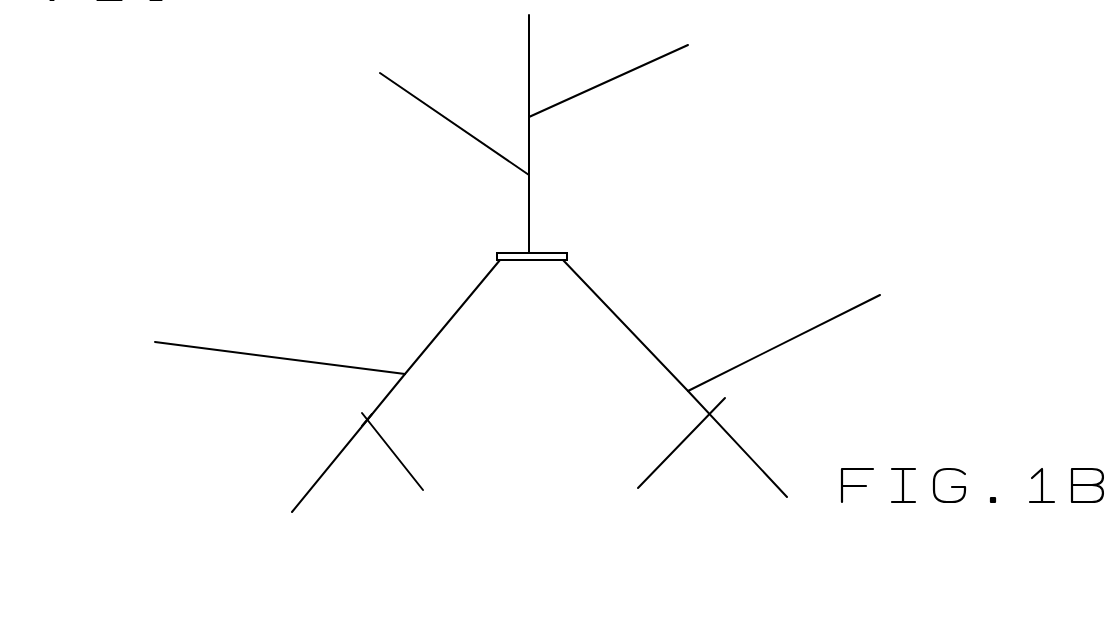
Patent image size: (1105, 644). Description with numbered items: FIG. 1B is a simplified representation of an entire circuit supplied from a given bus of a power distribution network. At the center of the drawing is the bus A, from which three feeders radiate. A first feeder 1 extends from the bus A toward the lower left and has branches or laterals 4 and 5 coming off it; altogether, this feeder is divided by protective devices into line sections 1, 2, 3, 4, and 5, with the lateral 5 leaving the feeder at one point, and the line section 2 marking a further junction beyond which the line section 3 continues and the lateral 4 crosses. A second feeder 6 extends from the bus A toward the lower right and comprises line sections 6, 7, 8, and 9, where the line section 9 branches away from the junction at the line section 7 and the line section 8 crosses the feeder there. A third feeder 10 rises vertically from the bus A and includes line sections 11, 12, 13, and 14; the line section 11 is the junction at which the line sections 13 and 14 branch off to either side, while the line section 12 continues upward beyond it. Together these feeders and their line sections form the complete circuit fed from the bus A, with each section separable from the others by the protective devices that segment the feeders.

The first feeder 1 is at (452, 317).
The line section 2 is at (362, 409).
The line section 3 is at (348, 443).
The branch or lateral 4 is at (392, 451).
The branch or lateral 5 is at (280, 347).
The second feeder 6 is at (625, 325).
The line section 7 is at (737, 441).
The line section 8 is at (681, 443).
The line section 9 is at (784, 343).
The third feeder 10 is at (546, 185).
The line section 11 is at (548, 130).
The line section 12 is at (547, 66).
The line section 13 is at (454, 124).
The line section 14 is at (608, 81).
The bus A is at (526, 244).